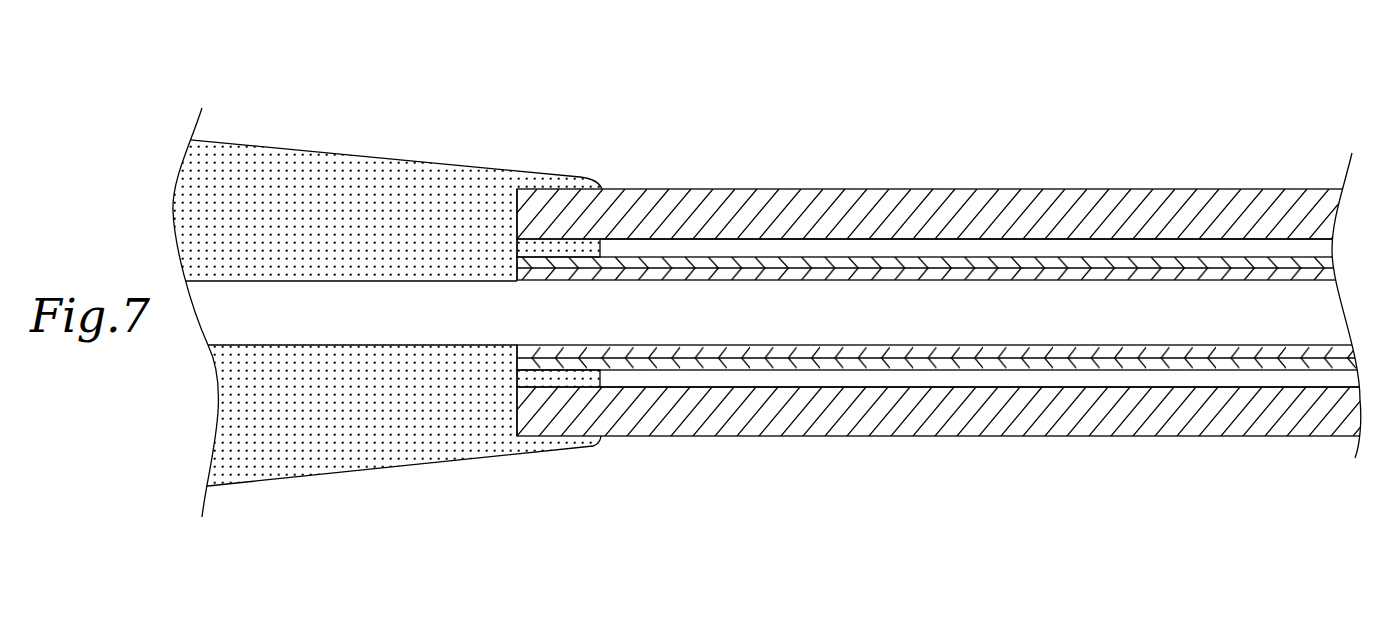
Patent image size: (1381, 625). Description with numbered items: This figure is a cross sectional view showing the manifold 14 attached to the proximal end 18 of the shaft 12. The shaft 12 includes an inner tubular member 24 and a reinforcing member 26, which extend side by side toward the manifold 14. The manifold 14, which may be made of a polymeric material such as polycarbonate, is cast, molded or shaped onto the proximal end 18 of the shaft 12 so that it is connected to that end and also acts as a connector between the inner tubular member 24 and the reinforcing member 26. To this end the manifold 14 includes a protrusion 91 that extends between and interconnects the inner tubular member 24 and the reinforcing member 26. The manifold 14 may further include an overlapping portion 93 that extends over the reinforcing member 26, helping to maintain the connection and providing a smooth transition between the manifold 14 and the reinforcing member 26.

The shaft 12 is at (819, 178).
The manifold 14 is at (341, 150).
The proximal end 18 is at (603, 186).
The inner tubular member 24 is at (731, 374).
The reinforcing member 26 is at (880, 440).
The protrusion 91 is at (557, 378).
The overlapping portion 93 is at (533, 447).